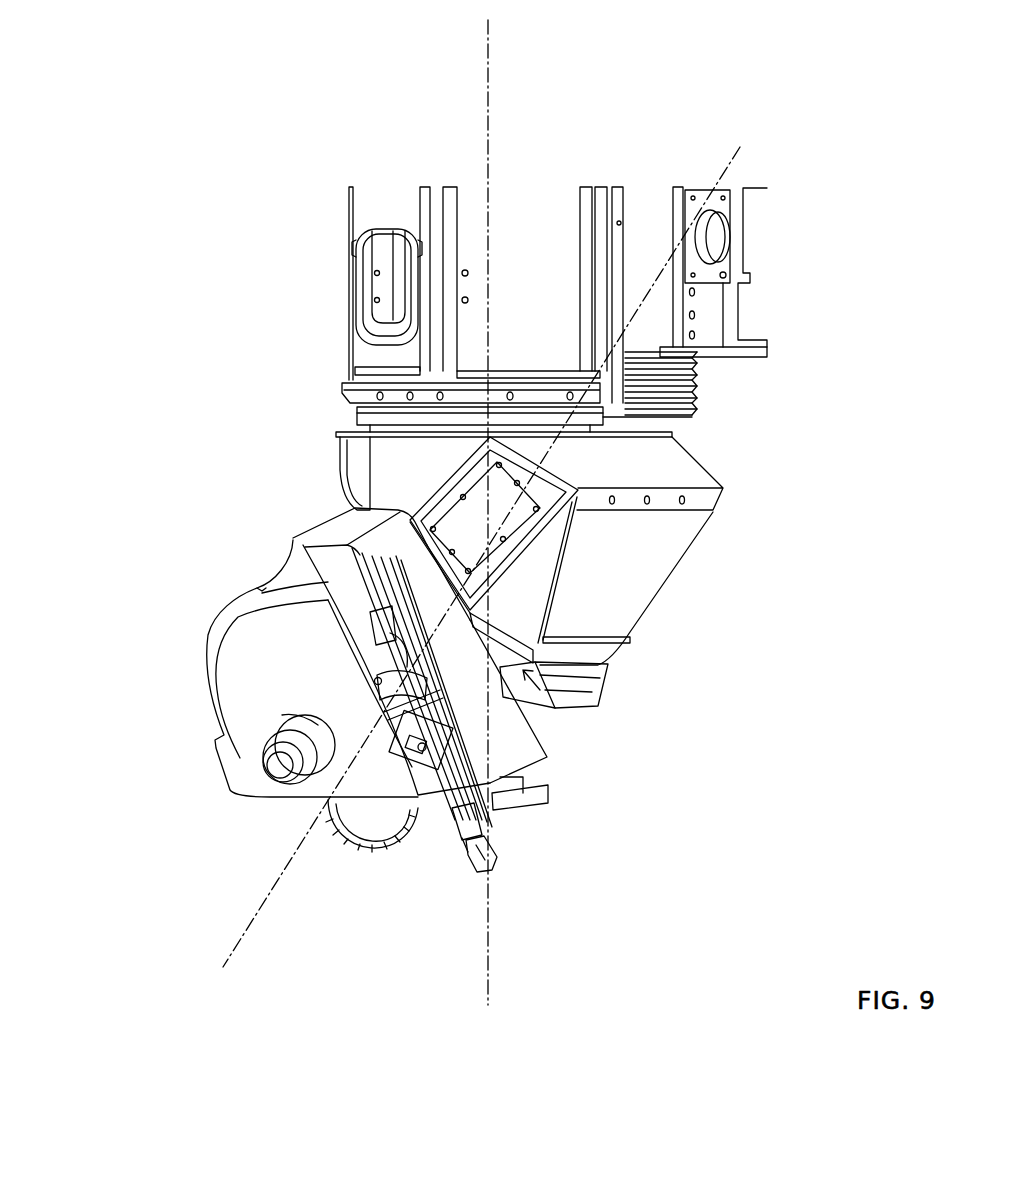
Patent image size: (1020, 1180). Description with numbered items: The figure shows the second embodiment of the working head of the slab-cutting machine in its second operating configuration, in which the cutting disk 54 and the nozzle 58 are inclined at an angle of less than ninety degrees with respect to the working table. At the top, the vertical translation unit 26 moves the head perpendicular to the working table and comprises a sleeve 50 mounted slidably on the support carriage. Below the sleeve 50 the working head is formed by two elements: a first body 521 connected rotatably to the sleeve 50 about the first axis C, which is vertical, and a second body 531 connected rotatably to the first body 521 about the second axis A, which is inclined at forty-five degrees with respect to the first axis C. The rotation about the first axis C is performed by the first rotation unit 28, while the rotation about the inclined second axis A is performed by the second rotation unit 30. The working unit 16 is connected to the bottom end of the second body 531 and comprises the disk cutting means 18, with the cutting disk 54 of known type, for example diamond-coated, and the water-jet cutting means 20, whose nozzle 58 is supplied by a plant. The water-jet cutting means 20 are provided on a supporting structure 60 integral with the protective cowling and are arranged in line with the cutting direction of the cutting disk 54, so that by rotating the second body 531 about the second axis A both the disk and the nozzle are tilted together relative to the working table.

The first axis C is at (490, 53).
The second axis A is at (738, 150).
The working unit 16 is at (180, 697).
The disk cutting means 18 is at (305, 818).
The water-jet cutting means 20 is at (515, 842).
The vertical translation unit 26 is at (330, 217).
The first rotation unit 28 is at (593, 460).
The second rotation unit 30 is at (556, 708).
The sleeve 50 is at (743, 233).
The cutting disk 54 is at (377, 848).
The nozzle 58 is at (478, 870).
The supporting structure 60 is at (297, 583).
The first body 521 is at (377, 480).
The second body 531 is at (537, 697).